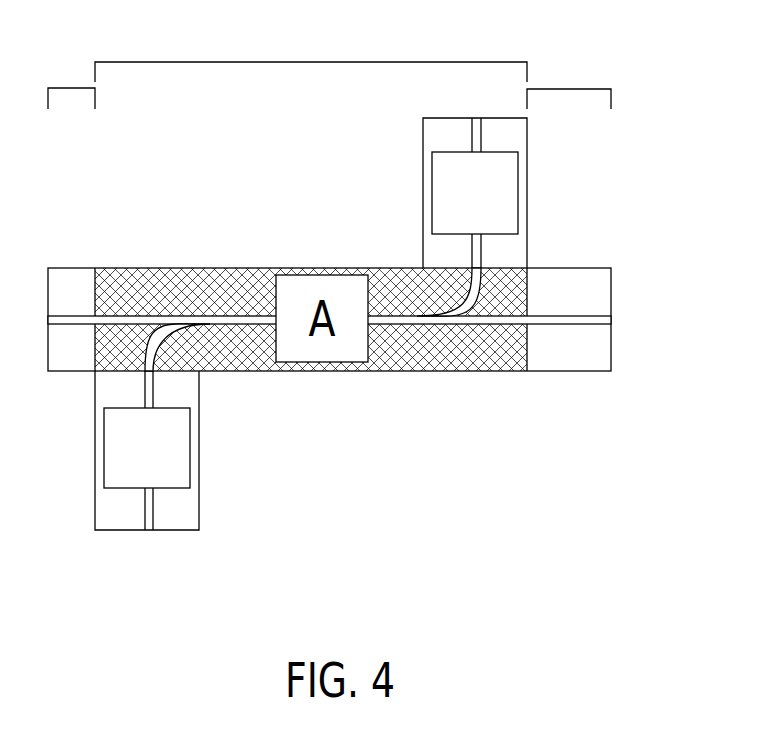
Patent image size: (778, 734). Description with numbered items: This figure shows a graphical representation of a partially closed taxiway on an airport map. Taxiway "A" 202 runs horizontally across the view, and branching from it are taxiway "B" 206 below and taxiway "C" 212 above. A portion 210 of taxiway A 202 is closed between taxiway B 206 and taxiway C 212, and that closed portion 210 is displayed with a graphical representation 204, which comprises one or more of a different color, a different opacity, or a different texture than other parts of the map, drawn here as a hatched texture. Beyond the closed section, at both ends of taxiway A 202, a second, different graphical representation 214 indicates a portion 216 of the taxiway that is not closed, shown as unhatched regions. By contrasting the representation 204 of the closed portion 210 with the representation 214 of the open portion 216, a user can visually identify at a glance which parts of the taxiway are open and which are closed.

The taxiway "A" 202 is at (238, 268).
The graphical representation 204 is at (398, 351).
The taxiway "B" 206 is at (199, 453).
The portion 210 is at (320, 62).
The taxiway "C" 212 is at (423, 158).
The second graphical representation 214 is at (588, 351).
The portion 216 is at (73, 88).